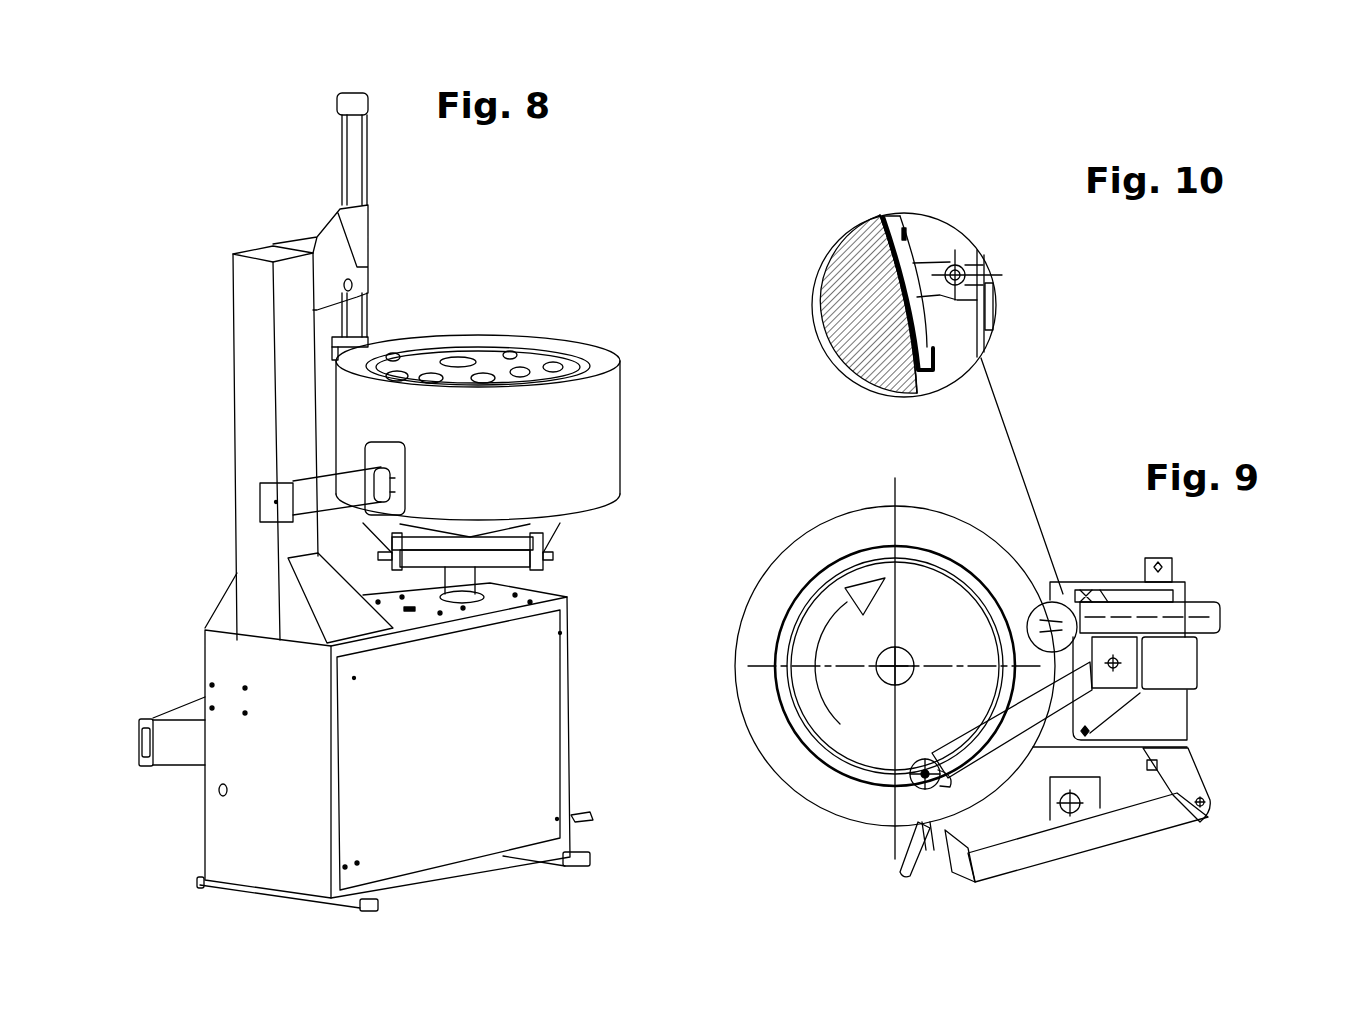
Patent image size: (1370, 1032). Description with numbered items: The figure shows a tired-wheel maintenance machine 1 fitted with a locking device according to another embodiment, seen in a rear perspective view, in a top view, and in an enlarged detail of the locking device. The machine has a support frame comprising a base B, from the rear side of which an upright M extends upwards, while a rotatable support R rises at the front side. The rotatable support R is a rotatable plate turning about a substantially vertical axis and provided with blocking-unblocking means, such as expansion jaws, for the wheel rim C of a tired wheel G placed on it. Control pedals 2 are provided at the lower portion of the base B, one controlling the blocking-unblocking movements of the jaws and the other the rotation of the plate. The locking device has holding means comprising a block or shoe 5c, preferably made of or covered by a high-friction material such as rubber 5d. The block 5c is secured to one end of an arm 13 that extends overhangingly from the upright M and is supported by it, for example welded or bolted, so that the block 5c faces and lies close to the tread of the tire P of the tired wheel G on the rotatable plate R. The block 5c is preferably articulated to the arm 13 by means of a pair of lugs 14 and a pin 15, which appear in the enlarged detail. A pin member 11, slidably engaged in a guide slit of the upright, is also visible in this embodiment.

In FIG. 8, the tired-wheel maintenance machine 1 is at (600, 128).
In FIG. 9, the tired-wheel maintenance machine 1 is at (1237, 748).
In FIG. 8, the control pedals 2 is at (580, 812).
In FIG. 8, the block or shoe 5c is at (389, 458).
In FIG. 10, the block or shoe 5c is at (886, 216).
In FIG. 10, the rubber 5d is at (880, 215).
In FIG. 9, the pin member 11 is at (1177, 663).
In FIG. 8, the arm 13 is at (316, 491).
In FIG. 9, the arm 13 is at (1198, 612).
In FIG. 10, the lugs 14 is at (933, 290).
In FIG. 10, the pin 15 is at (977, 263).
In FIG. 8, the upright M is at (256, 325).
In FIG. 8, the tired wheel G is at (412, 337).
In FIG. 8, the wheel rim C is at (518, 359).
In FIG. 8, the tire P is at (596, 384).
In FIG. 10, the tire P is at (833, 351).
In FIG. 9, the tire P is at (822, 795).
In FIG. 8, the rotatable support R is at (502, 555).
In FIG. 8, the base B is at (233, 670).